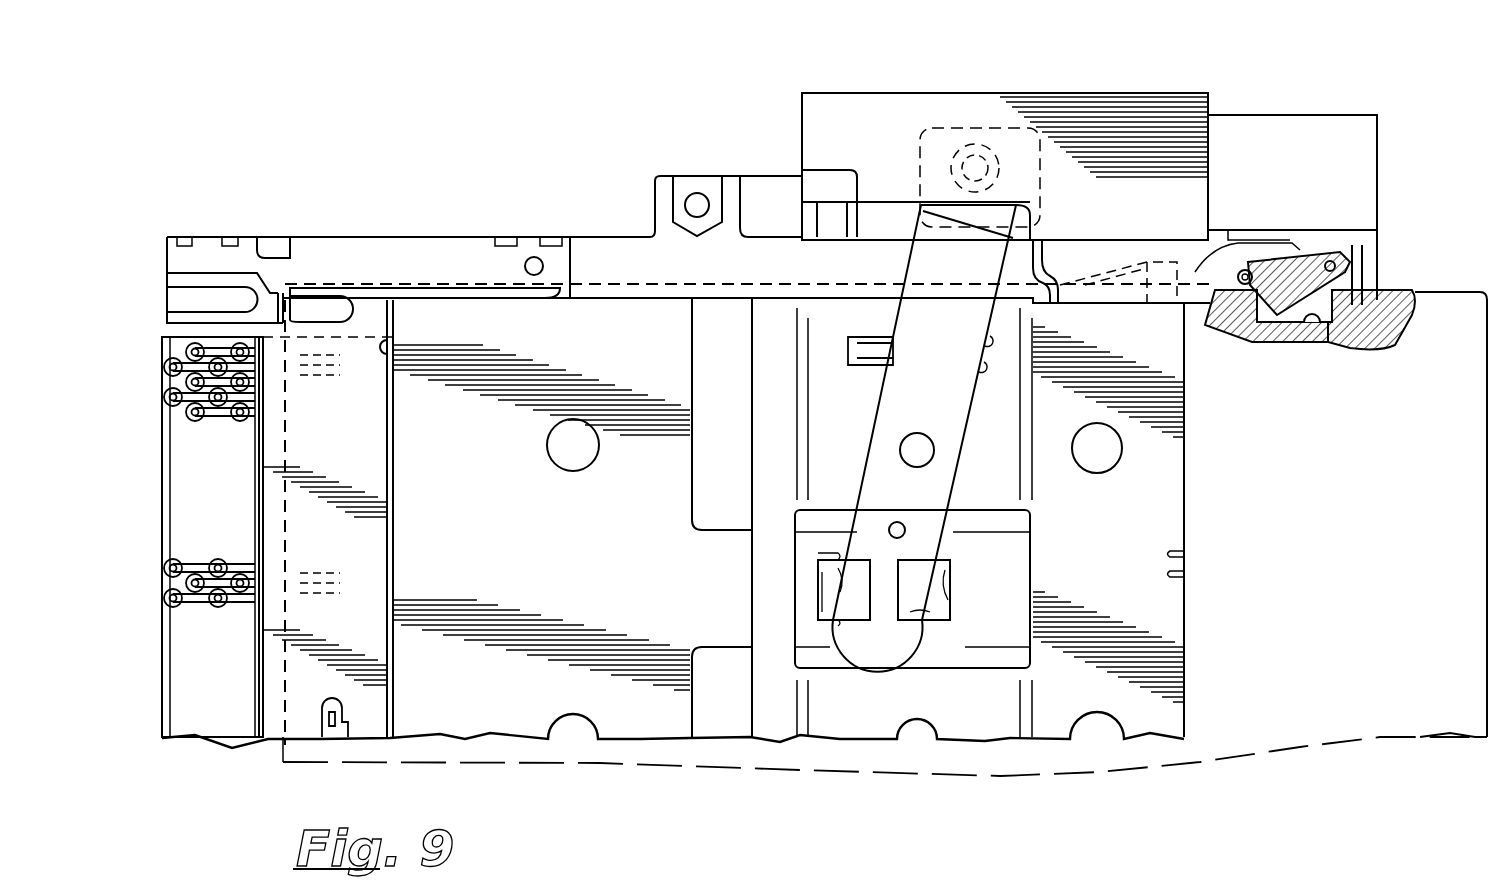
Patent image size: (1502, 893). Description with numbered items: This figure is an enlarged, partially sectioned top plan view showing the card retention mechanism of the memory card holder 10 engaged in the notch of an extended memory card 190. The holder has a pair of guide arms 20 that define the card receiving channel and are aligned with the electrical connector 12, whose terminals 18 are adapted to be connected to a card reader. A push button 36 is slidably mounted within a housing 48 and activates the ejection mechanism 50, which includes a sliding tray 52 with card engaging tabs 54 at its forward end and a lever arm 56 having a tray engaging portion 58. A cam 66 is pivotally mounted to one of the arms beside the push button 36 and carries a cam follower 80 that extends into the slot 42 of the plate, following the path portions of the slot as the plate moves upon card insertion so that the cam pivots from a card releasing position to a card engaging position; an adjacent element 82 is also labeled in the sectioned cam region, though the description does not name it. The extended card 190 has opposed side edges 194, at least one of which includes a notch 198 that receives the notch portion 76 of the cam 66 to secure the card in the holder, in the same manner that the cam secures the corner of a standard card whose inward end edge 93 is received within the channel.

The memory card holder 10 is at (636, 140).
The electrical connector 12 is at (368, 466).
The terminals 18 is at (222, 412).
The guide arms 20 is at (520, 210).
The push button 36 is at (1384, 133).
The slot 42 is at (1318, 246).
The housing 48 is at (1020, 92).
The ejection mechanism 50 is at (960, 584).
The sliding tray 52 is at (540, 575).
The card engaging tabs 54 is at (287, 312).
The lever arm 56 is at (960, 406).
The tray engaging portion 58 is at (882, 655).
The cam 66 is at (1360, 262).
The notch 76 is at (1258, 289).
The cam follower 80 is at (1247, 272).
The cam pin 82 is at (1332, 262).
The inward end edge 93 is at (286, 700).
The extended memory card 190 is at (1478, 286).
The side edges 194 is at (1390, 290).
The notch 198 is at (1313, 323).